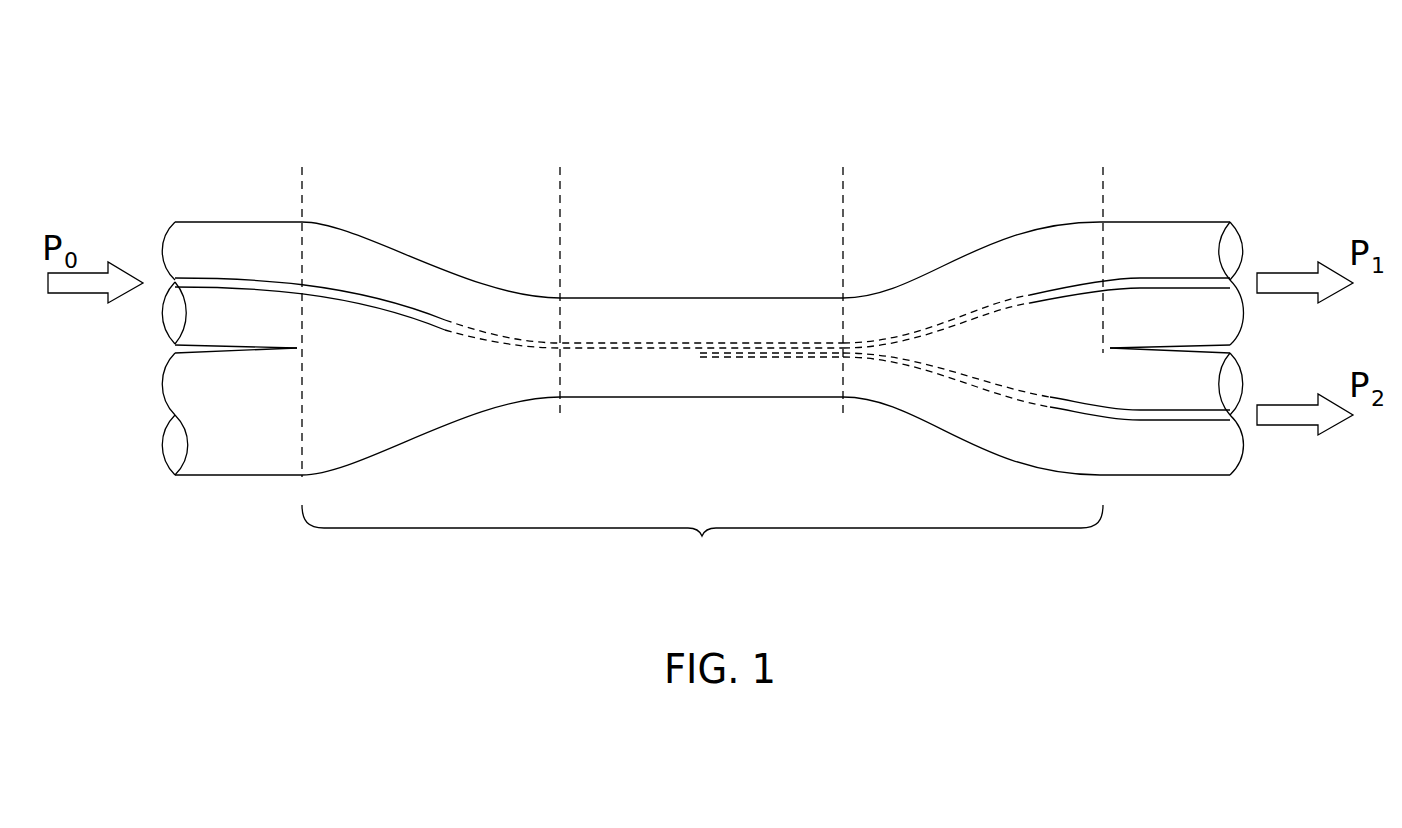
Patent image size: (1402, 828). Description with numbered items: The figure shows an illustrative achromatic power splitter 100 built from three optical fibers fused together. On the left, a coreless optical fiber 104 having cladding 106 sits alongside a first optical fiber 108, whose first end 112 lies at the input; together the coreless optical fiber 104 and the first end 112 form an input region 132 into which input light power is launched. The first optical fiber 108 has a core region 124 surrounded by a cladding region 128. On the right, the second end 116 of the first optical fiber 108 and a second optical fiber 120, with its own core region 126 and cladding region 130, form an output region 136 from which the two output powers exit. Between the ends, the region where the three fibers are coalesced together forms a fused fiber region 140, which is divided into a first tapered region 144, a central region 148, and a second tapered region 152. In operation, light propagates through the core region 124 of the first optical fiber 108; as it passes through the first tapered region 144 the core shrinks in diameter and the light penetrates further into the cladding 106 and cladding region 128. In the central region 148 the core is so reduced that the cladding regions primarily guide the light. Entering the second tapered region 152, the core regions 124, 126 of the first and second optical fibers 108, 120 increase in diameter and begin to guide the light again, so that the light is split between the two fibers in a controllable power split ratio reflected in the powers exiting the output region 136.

The achromatic power splitter 100 is at (903, 83).
The coreless optical fiber 104 is at (175, 477).
The cladding 106 is at (232, 448).
The first optical fiber 108 is at (264, 222).
The first end 112 is at (176, 222).
The second end 116 is at (1230, 222).
The second optical fiber 120 is at (1149, 475).
The core region 124 is at (207, 292).
The core region 126 is at (1243, 445).
The cladding region 128 is at (217, 246).
The cladding region 130 is at (1213, 457).
The input region 132 is at (197, 147).
The output region 136 is at (1205, 148).
The fused fiber region 140 is at (702, 539).
The first tapered region 144 is at (302, 167).
The central region 148 is at (560, 167).
The second tapered region 152 is at (843, 167).